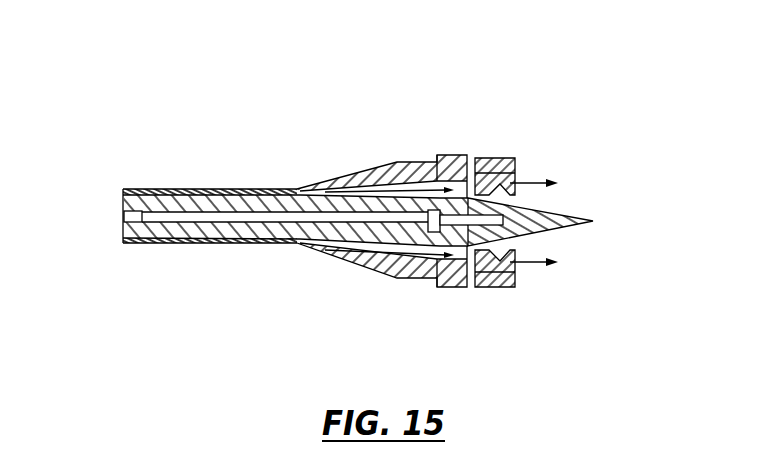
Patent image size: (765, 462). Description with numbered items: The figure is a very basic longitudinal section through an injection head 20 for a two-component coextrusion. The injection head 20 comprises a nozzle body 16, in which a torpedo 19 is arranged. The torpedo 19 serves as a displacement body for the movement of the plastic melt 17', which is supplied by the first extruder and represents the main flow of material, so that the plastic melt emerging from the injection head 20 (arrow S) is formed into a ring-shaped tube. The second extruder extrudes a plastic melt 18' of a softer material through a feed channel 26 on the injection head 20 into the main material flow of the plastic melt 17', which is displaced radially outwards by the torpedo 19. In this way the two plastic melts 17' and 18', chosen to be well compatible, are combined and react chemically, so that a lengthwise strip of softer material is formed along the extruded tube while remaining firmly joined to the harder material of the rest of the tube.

The injection head 20 is at (404, 92).
The plastic melt 17' is at (244, 217).
The nozzle body 16 is at (445, 266).
The feed channel 26 is at (473, 198).
The torpedo 19 is at (538, 217).
The plastic melt 18' is at (495, 178).
The arrow S is at (536, 226).